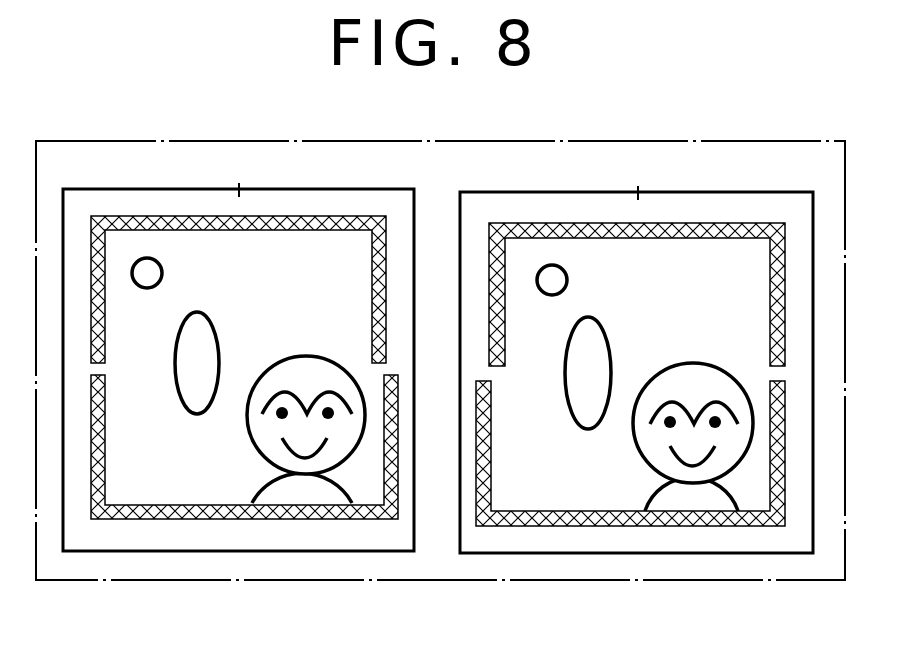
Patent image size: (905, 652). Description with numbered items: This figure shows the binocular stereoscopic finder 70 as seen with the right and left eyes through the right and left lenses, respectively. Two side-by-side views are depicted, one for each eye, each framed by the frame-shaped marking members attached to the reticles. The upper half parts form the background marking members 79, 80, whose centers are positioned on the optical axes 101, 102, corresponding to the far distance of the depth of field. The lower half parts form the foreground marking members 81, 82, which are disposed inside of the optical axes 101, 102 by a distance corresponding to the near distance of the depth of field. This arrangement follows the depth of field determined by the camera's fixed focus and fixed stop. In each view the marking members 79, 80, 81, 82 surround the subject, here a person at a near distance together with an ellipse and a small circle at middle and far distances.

The binocular stereoscopic finder 70 is at (800, 143).
The background marking member 79 is at (316, 216).
The background marking member 80 is at (712, 223).
The foreground marking member 81 is at (218, 519).
The foreground marking member 82 is at (600, 526).
The optical axis 101 is at (241, 169).
The optical axis 102 is at (640, 174).